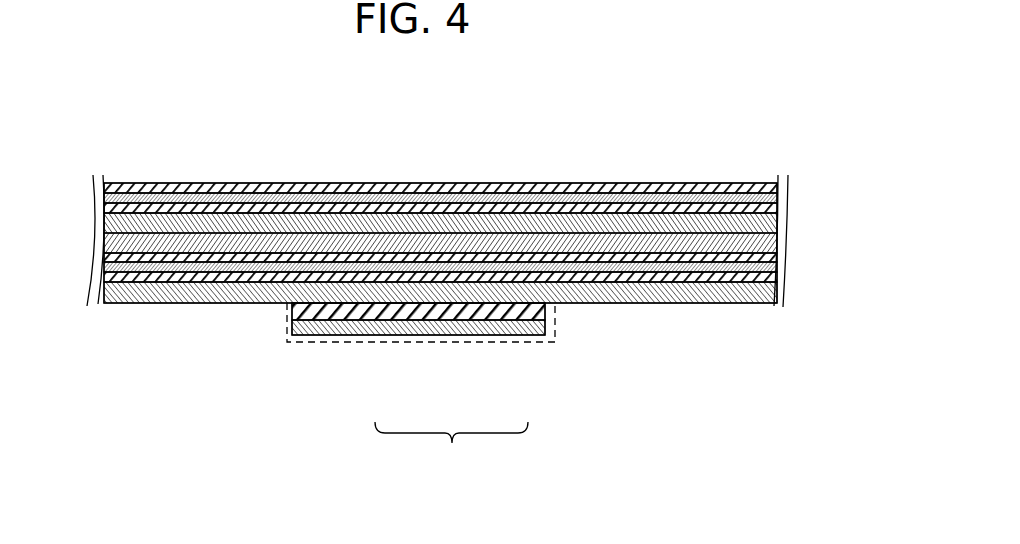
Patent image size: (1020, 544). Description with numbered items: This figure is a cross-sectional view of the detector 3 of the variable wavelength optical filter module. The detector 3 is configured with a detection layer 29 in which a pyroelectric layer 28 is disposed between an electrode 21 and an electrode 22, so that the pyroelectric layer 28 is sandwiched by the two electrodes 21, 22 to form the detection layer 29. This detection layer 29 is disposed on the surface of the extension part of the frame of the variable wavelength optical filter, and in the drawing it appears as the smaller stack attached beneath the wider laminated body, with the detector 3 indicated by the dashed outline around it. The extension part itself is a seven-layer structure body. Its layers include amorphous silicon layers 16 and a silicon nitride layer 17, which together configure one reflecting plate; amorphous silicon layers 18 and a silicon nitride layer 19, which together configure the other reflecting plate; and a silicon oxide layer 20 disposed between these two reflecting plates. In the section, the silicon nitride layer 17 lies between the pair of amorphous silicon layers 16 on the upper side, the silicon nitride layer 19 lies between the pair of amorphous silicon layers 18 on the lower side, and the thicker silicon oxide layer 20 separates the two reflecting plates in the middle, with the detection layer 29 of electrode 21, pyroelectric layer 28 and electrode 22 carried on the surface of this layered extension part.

The detector 3 is at (313, 344).
The amorphous silicon layers 16 is at (240, 190).
The silicon nitride layer 17 is at (277, 202).
The amorphous silicon layers 18 is at (555, 256).
The silicon nitride layer 19 is at (602, 270).
The silicon oxide layer 20 is at (147, 235).
The electrode 21 is at (383, 320).
The electrode 22 is at (492, 290).
The pyroelectric layer 28 is at (435, 320).
The detection layer 29 is at (451, 451).